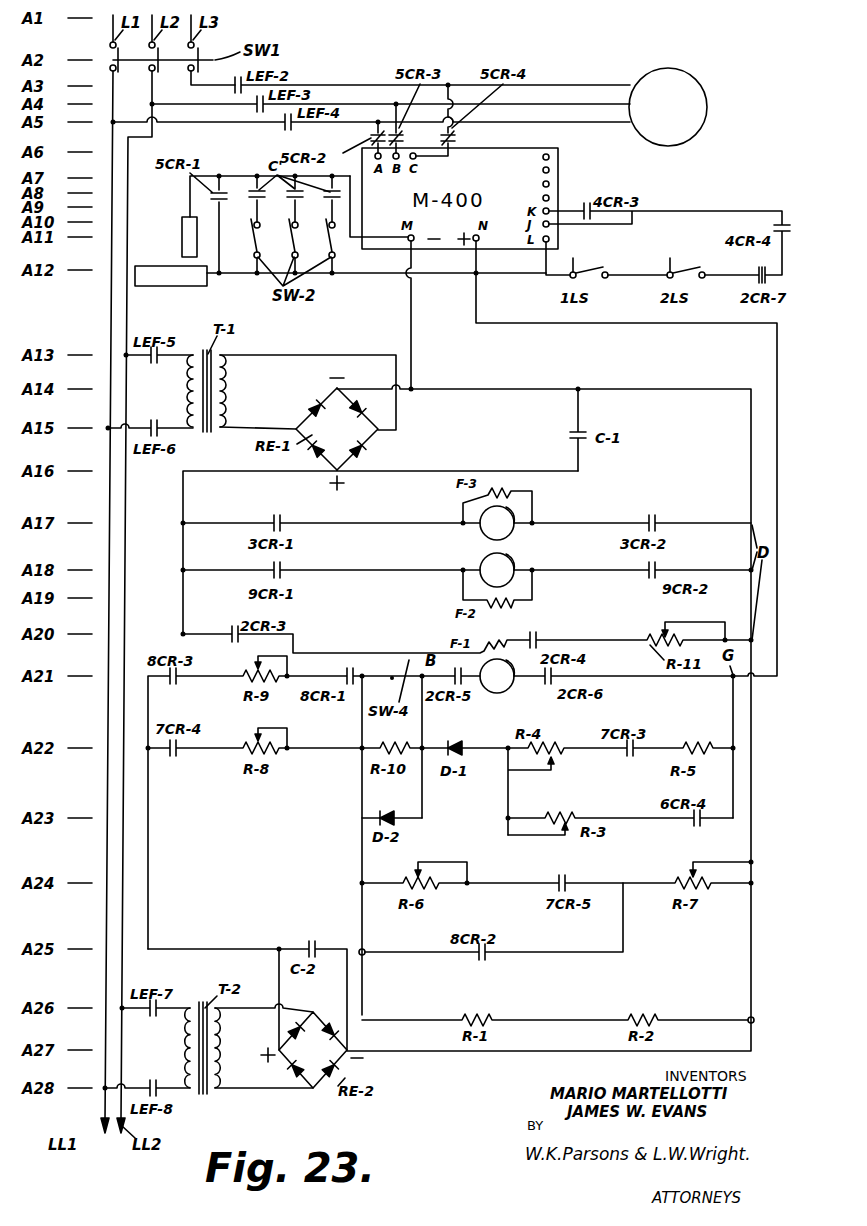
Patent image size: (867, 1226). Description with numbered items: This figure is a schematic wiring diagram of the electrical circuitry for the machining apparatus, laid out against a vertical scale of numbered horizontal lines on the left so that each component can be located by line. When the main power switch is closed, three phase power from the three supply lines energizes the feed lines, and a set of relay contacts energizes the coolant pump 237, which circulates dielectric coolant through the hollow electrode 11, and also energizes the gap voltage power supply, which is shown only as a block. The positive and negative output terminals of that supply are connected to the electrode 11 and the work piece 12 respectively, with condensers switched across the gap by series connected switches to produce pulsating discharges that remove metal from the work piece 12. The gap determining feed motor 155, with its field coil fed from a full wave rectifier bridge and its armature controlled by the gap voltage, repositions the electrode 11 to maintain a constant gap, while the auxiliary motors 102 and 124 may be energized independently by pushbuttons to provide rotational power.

The hollow electrode 11 is at (182, 230).
The work piece 12 is at (178, 287).
The auxiliary motor 102 is at (483, 560).
The auxiliary motor 124 is at (478, 512).
The gap determining feed motor 155 is at (497, 694).
The coolant pump 237 is at (700, 82).